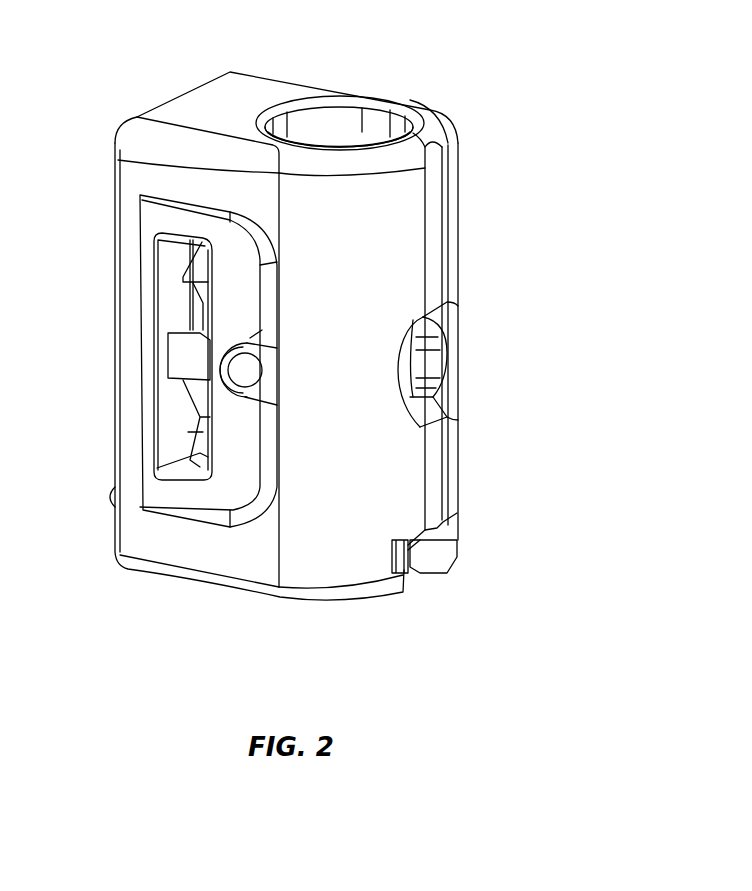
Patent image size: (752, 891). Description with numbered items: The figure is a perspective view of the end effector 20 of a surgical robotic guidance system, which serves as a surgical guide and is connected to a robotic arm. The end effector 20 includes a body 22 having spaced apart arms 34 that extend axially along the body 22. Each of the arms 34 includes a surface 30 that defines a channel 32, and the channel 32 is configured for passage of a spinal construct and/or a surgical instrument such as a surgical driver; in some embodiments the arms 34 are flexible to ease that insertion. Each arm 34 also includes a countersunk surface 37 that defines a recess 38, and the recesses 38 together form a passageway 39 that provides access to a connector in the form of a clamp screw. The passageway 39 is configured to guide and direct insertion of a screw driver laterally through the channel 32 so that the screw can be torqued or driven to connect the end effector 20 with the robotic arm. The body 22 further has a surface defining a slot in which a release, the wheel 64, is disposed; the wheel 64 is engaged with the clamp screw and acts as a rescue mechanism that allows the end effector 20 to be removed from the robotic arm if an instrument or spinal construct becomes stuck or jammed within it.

The end effector 20 is at (59, 38).
The body 22 is at (520, 197).
The surface 30 is at (380, 127).
The channel 32 is at (347, 127).
The arms 34 is at (455, 165).
The countersunk surface 37 is at (442, 317).
The recess 38 is at (447, 387).
The passageway 39 is at (413, 367).
The wheel 64 is at (178, 352).